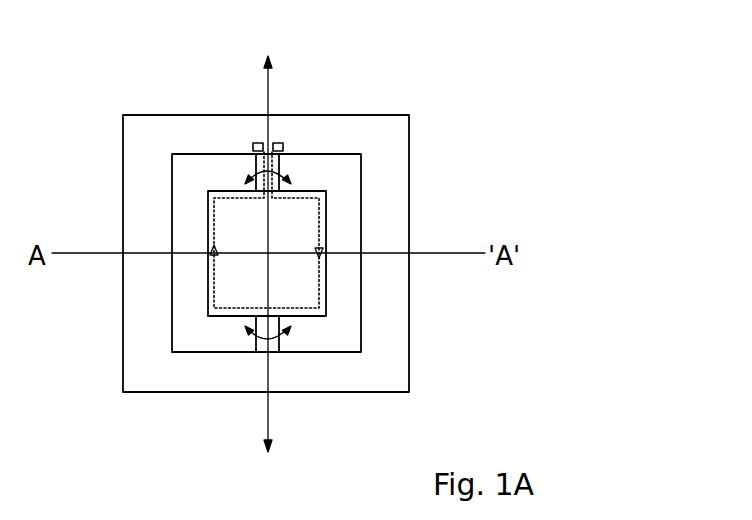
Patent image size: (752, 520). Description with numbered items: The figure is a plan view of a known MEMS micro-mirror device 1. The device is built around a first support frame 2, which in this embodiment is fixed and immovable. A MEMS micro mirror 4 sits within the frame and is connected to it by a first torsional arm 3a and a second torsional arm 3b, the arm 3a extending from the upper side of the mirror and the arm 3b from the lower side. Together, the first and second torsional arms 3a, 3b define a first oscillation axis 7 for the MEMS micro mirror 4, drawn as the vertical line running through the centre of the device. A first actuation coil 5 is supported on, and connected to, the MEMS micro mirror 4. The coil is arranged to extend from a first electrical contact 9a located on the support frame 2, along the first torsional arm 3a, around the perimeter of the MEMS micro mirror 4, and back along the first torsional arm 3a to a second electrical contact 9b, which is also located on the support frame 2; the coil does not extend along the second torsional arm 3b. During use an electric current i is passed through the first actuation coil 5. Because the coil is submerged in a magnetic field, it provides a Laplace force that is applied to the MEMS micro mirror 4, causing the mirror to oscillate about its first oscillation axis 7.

The MEMS micro-mirror device 1 is at (490, 51).
The first support frame 2 is at (387, 153).
The first torsional arm 3a is at (270, 143).
The second torsional arm 3b is at (262, 343).
The MEMS micro mirror 4 is at (233, 291).
The first actuation coil 5 is at (320, 290).
The first oscillation axis 7 is at (265, 87).
The first electrical contact 9a is at (252, 144).
The second electrical contact 9b is at (283, 144).
The electric current i is at (323, 227).